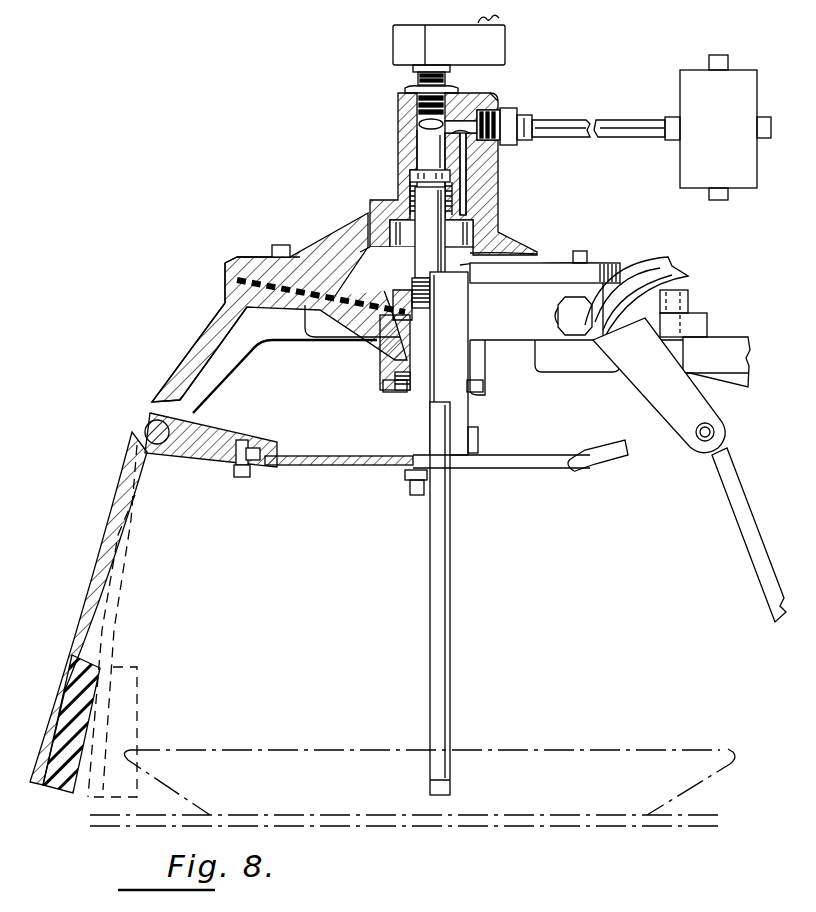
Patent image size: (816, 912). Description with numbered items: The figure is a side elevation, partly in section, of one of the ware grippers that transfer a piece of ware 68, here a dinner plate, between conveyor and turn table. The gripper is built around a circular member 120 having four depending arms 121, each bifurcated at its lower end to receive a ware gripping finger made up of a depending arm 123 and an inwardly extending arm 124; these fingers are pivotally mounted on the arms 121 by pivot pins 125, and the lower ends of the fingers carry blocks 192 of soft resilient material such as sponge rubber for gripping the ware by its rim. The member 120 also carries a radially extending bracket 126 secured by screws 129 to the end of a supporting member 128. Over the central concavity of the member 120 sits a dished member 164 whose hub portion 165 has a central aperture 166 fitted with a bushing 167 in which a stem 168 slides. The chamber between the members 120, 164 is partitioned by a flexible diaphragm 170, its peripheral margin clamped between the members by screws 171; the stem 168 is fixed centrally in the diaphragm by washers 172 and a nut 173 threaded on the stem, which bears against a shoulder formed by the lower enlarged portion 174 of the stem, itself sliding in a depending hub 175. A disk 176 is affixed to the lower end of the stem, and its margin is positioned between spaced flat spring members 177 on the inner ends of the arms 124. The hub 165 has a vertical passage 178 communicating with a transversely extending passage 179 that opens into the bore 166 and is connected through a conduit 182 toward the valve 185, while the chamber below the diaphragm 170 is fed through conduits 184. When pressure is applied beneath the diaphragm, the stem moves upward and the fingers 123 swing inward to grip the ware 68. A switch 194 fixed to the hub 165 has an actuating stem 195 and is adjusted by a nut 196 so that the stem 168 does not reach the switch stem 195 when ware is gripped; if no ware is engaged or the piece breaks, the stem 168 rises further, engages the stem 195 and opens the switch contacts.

The switch 194 is at (449, 43).
The nut 196 is at (416, 90).
The actuating stem 195 is at (421, 126).
The transversely extending passage 179 is at (499, 104).
The conduit 182 is at (560, 121).
The valve 185 is at (682, 127).
The vertical passage 178 is at (467, 157).
The central aperture 166 is at (429, 164).
The hub portion 165 is at (497, 178).
The bushing 167 is at (410, 188).
The dished member 164 is at (521, 249).
The screws 171 is at (283, 257).
The stem 168 is at (418, 257).
The nut 173 is at (396, 290).
The flexible diaphragm 170 is at (392, 300).
The washers 172 is at (421, 319).
The lower enlarged portion 174 is at (431, 340).
The circular member 120 is at (576, 323).
The conduits 184 is at (645, 270).
The screws 129 is at (690, 293).
The radially extending bracket 126 is at (703, 313).
The supporting members 128 is at (716, 362).
The depending arms 121 is at (229, 371).
The depending hub 175 is at (380, 360).
The pivot pins 125 is at (146, 428).
The inwardly extending arm 124 is at (240, 437).
The flat spring members 177 is at (278, 452).
The disk 176 is at (492, 456).
The depending arm 123 is at (94, 567).
The blocks 192 is at (100, 668).
The ware 68 is at (245, 746).